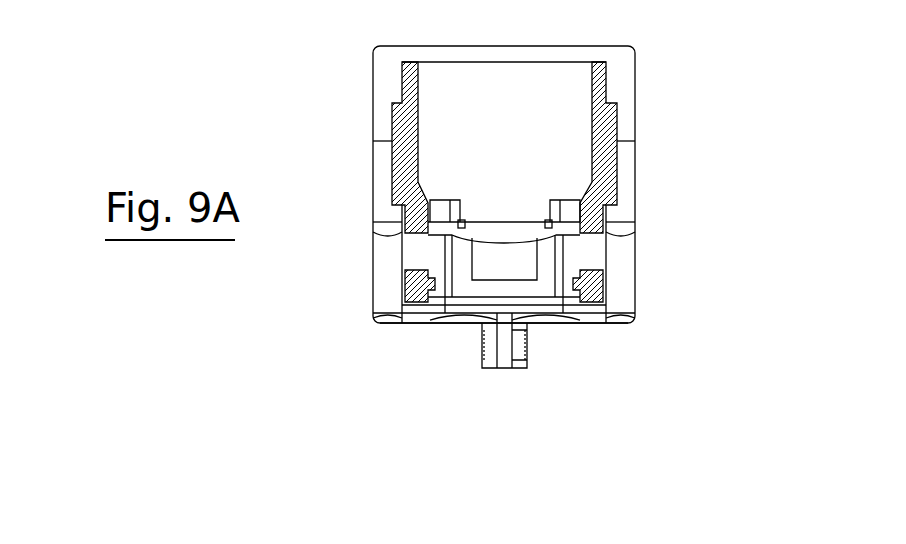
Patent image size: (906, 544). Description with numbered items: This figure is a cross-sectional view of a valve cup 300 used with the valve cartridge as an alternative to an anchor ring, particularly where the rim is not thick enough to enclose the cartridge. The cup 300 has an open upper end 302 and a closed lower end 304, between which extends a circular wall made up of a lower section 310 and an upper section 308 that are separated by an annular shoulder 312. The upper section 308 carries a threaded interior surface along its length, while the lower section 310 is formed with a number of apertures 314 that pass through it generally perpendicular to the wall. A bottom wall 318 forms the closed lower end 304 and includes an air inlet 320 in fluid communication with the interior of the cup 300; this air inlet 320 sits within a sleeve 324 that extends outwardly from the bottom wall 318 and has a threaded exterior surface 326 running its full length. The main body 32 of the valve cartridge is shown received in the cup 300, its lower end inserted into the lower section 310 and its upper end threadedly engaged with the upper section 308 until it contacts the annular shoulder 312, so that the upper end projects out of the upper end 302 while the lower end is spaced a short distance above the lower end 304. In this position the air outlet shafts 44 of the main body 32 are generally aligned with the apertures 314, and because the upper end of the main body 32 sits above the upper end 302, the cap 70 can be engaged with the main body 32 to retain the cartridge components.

The cap 70 is at (381, 65).
The main body 32 is at (422, 141).
The open upper end 302 is at (632, 141).
The upper section 308 is at (383, 164).
The annular shoulder 312 is at (383, 215).
The apertures 314 is at (385, 255).
The lower section 310 is at (387, 290).
The air outlet shafts 44 is at (578, 252).
The bottom wall 318 is at (435, 325).
The closed lower end 304 is at (628, 328).
The threaded exterior surface 326 is at (527, 365).
The air inlet 320 is at (507, 357).
The sleeve 324 is at (518, 342).
The valve cup 300 is at (362, 338).